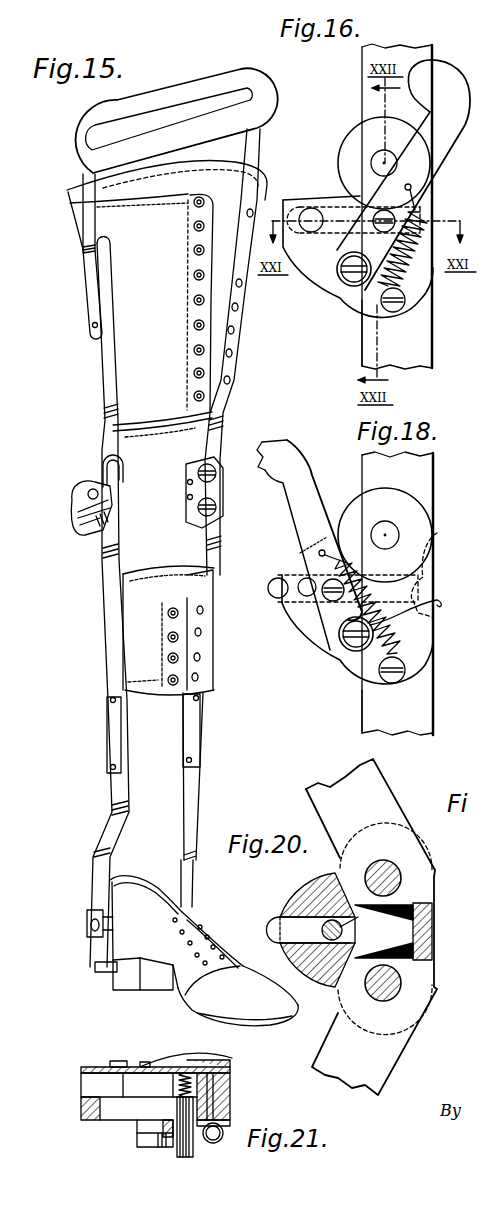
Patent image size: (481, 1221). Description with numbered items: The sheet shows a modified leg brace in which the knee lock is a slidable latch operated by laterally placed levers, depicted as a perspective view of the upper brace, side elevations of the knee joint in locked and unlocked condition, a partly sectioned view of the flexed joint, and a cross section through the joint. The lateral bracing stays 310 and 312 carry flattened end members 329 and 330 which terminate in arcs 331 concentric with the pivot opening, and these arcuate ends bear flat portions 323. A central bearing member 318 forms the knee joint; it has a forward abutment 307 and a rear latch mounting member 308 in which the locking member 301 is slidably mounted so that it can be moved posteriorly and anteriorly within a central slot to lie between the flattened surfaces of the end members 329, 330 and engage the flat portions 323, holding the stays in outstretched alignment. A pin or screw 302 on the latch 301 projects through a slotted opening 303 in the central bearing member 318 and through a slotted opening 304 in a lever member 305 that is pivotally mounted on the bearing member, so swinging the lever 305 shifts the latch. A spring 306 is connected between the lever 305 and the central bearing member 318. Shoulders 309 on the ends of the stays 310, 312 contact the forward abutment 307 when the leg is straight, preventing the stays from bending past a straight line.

In FIG. 16, the locking member 301 is at (302, 206).
In FIG. 18, the locking member 301 is at (279, 590).
In FIG. 20, the locking member 301 is at (270, 917).
In FIG. 21, the locking member 301 is at (145, 1078).
In FIG. 16, the pin or screw 302 is at (391, 208).
In FIG. 18, the pin or screw 302 is at (330, 612).
In FIG. 20, the pin or screw 302 is at (346, 926).
In FIG. 21, the pin or screw 302 is at (183, 1145).
In FIG. 16, the slotted opening 303 is at (307, 210).
In FIG. 18, the slotted opening 303 is at (298, 584).
In FIG. 21, the slotted opening 303 is at (112, 1120).
In FIG. 16, the slotted opening 304 is at (342, 238).
In FIG. 18, the slotted opening 304 is at (332, 628).
In FIG. 21, the slotted opening 304 is at (168, 1120).
In FIG. 15, the lever member 305 is at (222, 420).
In FIG. 16, the lever member 305 is at (403, 175).
In FIG. 18, the lever member 305 is at (304, 482).
In FIG. 21, the lever member 305 is at (148, 1130).
In FIG. 16, the spring 306 is at (420, 287).
In FIG. 18, the spring 306 is at (427, 645).
In FIG. 21, the spring 306 is at (220, 1142).
In FIG. 18, the forward abutment 307 is at (437, 606).
In FIG. 20, the forward abutment 307 is at (433, 923).
In FIG. 21, the forward abutment 307 is at (232, 1102).
In FIG. 16, the rear latch mounting member 308 is at (315, 262).
In FIG. 18, the rear latch mounting member 308 is at (300, 566).
In FIG. 20, the rear latch mounting member 308 is at (290, 944).
In FIG. 21, the rear latch mounting member 308 is at (81, 1105).
In FIG. 18, the shoulders 309 is at (433, 540).
In FIG. 20, the shoulders 309 is at (432, 874).
In FIG. 15, the stay 310 is at (105, 440).
In FIG. 15, the stay 312 is at (205, 546).
In FIG. 15, the central bearing member 318 is at (76, 494).
In FIG. 16, the central bearing member 318 is at (333, 299).
In FIG. 18, the central bearing member 318 is at (359, 610).
In FIG. 20, the central bearing member 318 is at (296, 900).
In FIG. 21, the central bearing member 318 is at (240, 1092).
In FIG. 20, the flat portions 323 is at (426, 892).
In FIG. 16, the end member 329 is at (362, 88).
In FIG. 18, the end member 329 is at (420, 478).
In FIG. 20, the end member 329 is at (370, 800).
In FIG. 16, the end member 330 is at (420, 345).
In FIG. 18, the end member 330 is at (418, 702).
In FIG. 20, the end member 330 is at (385, 1061).
In FIG. 20, the arcs 331 is at (342, 866).